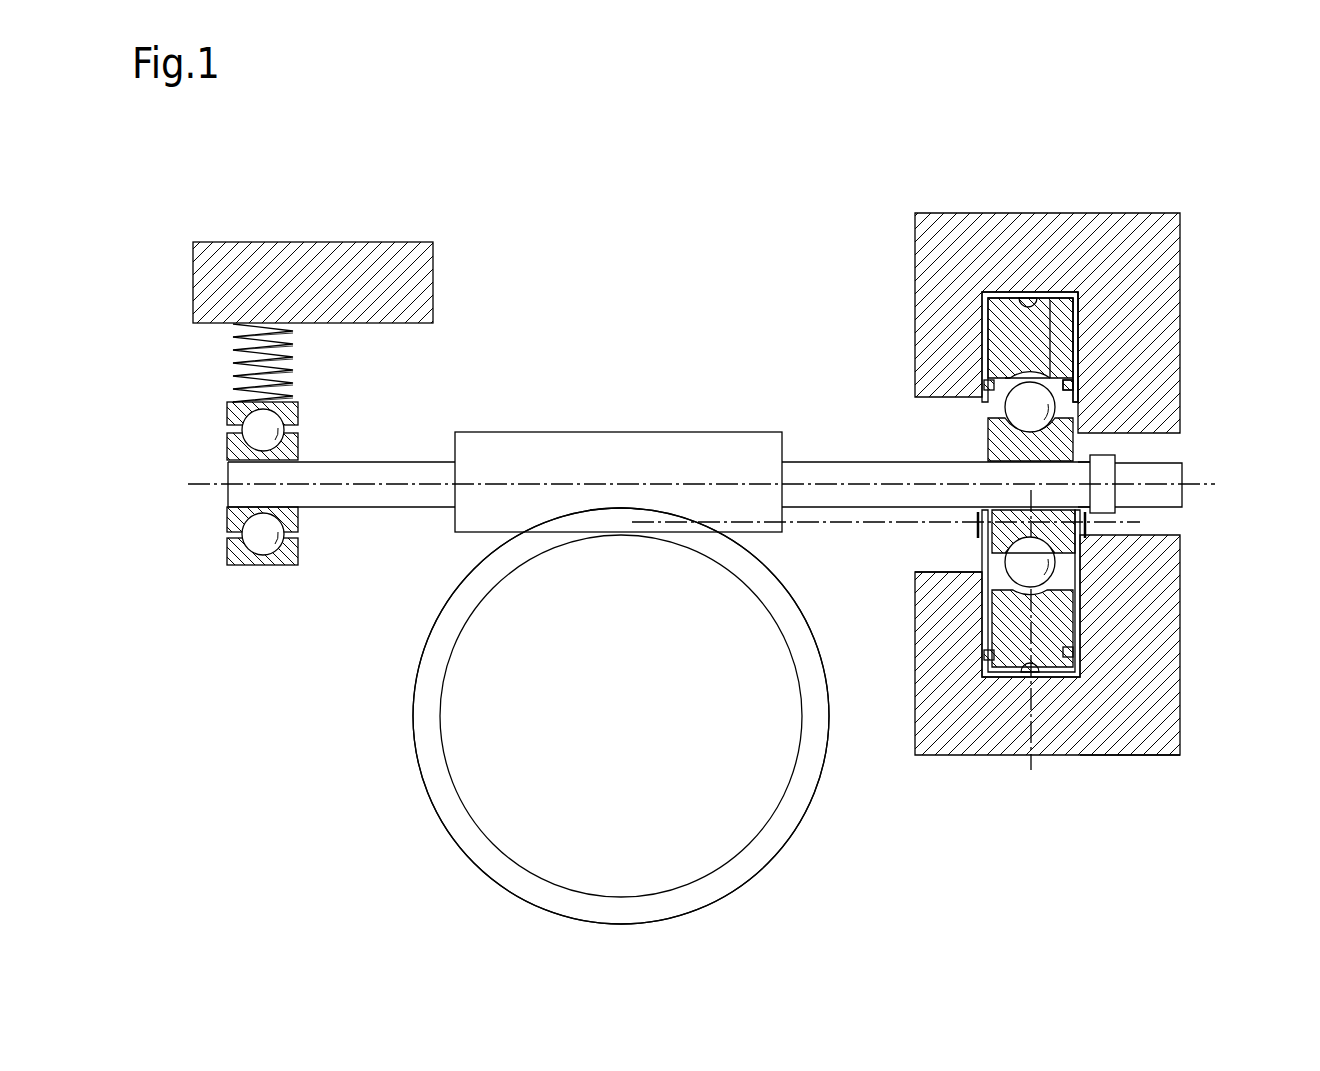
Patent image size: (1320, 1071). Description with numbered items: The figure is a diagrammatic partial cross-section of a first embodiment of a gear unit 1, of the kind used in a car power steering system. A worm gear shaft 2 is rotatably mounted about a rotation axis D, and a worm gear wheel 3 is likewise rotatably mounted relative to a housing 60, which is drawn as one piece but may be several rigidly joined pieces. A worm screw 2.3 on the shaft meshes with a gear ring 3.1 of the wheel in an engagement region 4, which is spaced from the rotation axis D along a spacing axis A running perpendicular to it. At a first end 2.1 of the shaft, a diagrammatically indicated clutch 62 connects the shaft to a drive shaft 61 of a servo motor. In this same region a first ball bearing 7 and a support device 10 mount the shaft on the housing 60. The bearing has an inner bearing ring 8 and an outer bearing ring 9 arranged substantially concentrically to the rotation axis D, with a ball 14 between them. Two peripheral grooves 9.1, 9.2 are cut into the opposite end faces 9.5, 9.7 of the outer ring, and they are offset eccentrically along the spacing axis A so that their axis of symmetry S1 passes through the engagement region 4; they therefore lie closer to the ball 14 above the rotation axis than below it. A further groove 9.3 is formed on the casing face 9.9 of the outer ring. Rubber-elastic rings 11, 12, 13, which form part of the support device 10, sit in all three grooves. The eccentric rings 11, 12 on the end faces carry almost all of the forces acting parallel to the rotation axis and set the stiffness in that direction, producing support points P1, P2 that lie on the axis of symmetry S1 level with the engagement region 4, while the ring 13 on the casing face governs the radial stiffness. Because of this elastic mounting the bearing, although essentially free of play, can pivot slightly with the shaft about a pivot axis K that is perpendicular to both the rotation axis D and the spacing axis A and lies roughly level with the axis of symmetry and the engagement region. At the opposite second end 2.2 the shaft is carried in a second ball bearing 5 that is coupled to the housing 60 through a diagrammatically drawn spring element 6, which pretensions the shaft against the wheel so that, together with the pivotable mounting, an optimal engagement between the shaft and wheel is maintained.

The gear unit 1 is at (670, 187).
The worm gear shaft 2 is at (858, 462).
The first end 2.1 is at (1090, 442).
The second end 2.2 is at (182, 496).
The worm screw 2.3 is at (662, 453).
The worm gear wheel 3 is at (598, 732).
The gear ring 3.1 is at (413, 673).
The engagement region 4 is at (612, 517).
The second ball bearing 5 is at (226, 569).
The spring element 6 is at (207, 355).
The first ball bearing 7 is at (948, 603).
The inner bearing ring 8 is at (988, 437).
The outer bearing ring 9 is at (982, 335).
The peripheral groove 9.1 is at (1028, 296).
The peripheral groove 9.2 is at (1076, 375).
The further groove 9.3 is at (1060, 372).
The end face 9.5 is at (984, 384).
The end face 9.7 is at (1078, 352).
The casing face 9.9 is at (1005, 308).
The support device 10 is at (1077, 705).
The rubber-elastic ring 11 is at (982, 388).
The rubber-elastic ring 12 is at (1075, 384).
The rubber-elastic ring 13 is at (1036, 300).
The ball 14 is at (1038, 405).
The housing 60 is at (259, 285).
The drive shaft 61 is at (1165, 495).
The clutch 62 is at (1103, 462).
The spacing axis A is at (1030, 736).
The rotation axis D is at (835, 484).
The pivot axis K is at (1025, 528).
The support point P1 is at (975, 524).
The support point P2 is at (1088, 523).
The axis of symmetry S1 is at (817, 524).